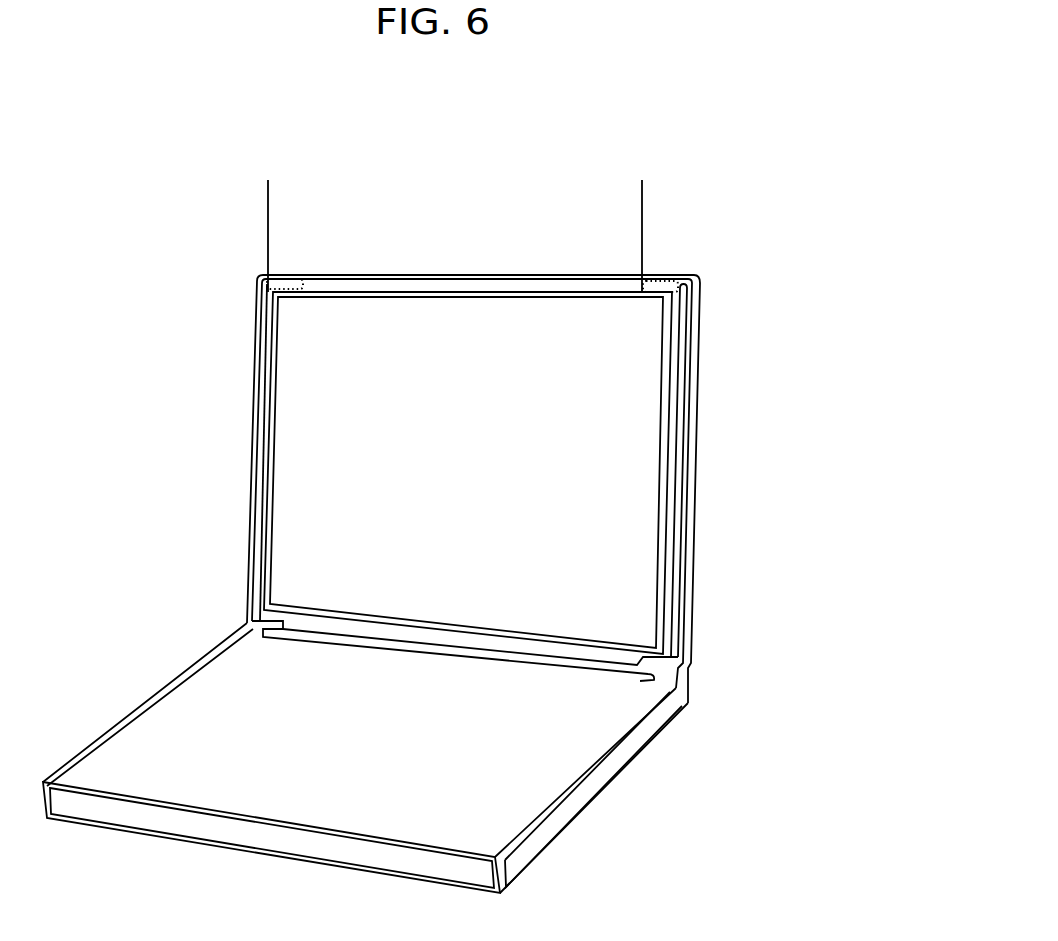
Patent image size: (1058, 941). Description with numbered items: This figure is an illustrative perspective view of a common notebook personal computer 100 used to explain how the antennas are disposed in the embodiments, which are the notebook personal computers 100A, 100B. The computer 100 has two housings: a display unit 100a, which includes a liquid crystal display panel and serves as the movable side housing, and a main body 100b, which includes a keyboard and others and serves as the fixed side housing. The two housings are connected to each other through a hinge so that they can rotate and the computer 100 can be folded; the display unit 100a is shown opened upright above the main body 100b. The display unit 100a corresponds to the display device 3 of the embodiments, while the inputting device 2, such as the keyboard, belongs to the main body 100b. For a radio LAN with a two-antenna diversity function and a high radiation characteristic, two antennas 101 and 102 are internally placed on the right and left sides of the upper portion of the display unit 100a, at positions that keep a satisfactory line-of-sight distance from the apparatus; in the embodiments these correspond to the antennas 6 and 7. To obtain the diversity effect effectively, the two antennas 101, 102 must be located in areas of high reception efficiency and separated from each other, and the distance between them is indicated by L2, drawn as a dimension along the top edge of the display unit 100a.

The notebook personal computer 100 is at (490, 536).
The notebook personal computer 100A is at (592, 544).
The notebook personal computer 100B is at (714, 712).
The display unit 100a is at (676, 468).
The main body 100b is at (583, 795).
The antenna 101 is at (179, 244).
The antenna 6 is at (255, 275).
The antenna 102 is at (716, 239).
The antenna 7 is at (680, 275).
The inputting device 2 is at (384, 758).
The display device 3 is at (354, 482).
The distance between the antennas L2 is at (638, 222).